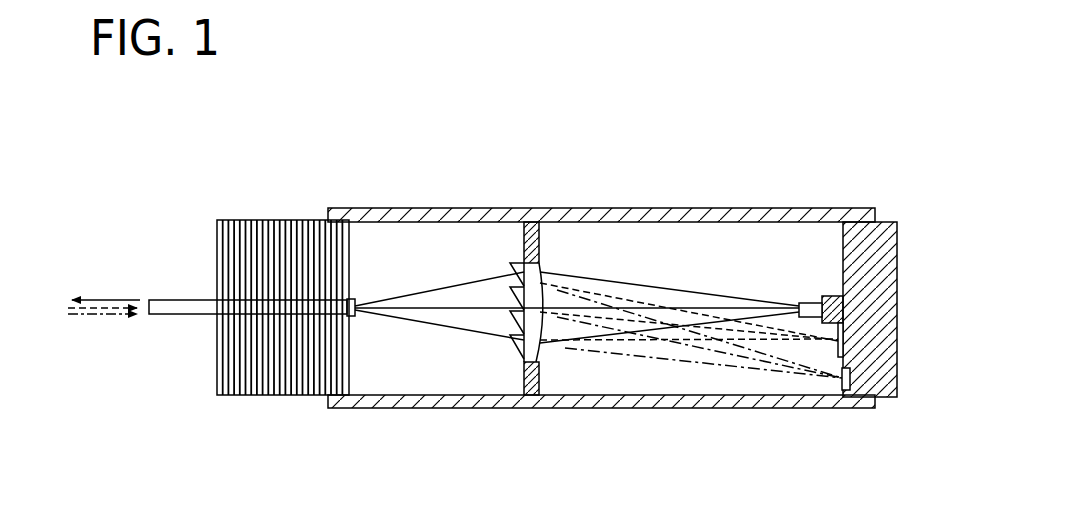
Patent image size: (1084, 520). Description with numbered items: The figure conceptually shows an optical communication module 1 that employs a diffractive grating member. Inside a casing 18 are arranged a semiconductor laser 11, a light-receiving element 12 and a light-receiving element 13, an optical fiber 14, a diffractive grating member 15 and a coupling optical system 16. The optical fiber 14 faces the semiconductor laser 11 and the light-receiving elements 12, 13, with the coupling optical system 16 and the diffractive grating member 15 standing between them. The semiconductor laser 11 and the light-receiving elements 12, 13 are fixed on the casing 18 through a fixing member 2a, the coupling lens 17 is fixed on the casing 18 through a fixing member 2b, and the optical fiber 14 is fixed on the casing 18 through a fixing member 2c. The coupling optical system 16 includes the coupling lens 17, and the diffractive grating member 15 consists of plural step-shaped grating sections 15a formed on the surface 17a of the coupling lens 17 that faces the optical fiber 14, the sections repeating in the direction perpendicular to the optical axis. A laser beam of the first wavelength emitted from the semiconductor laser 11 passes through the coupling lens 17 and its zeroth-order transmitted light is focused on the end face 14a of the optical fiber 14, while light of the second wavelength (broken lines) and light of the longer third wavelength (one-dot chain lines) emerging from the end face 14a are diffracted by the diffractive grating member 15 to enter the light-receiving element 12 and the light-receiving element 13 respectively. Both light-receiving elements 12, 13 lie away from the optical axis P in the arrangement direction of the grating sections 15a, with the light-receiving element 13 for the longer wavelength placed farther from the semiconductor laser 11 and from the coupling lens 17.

The optical communication module 1 is at (501, 302).
The fixing member 2a is at (887, 340).
The fixing member 2b is at (541, 378).
The fixing member 2c is at (252, 387).
The semiconductor laser 11 is at (812, 303).
The light-receiving element 12 is at (837, 348).
The light-receiving element 13 is at (842, 390).
The optical fiber 14 is at (185, 315).
The end face 14a is at (357, 316).
The diffractive grating member 15 is at (461, 248).
The step-shaped grating section 15a is at (508, 293).
The coupling optical system 16 is at (542, 260).
The coupling lens 17 is at (509, 313).
The surface 17a is at (524, 362).
The casing 18 is at (697, 208).
The optical axis P is at (420, 309).